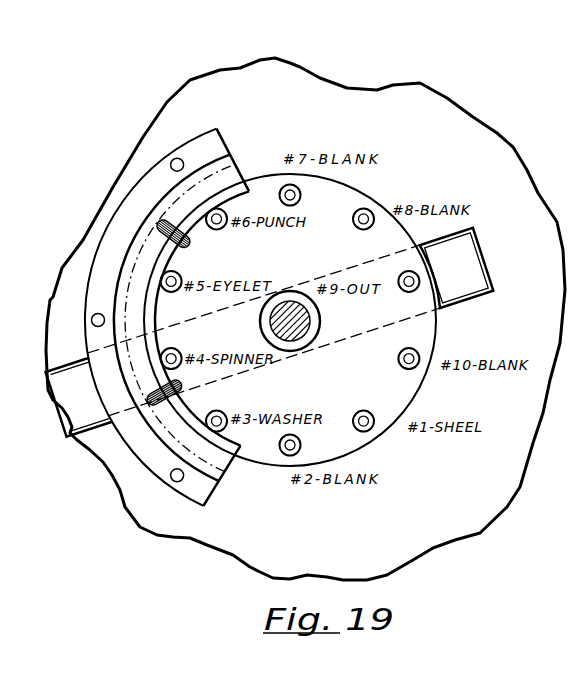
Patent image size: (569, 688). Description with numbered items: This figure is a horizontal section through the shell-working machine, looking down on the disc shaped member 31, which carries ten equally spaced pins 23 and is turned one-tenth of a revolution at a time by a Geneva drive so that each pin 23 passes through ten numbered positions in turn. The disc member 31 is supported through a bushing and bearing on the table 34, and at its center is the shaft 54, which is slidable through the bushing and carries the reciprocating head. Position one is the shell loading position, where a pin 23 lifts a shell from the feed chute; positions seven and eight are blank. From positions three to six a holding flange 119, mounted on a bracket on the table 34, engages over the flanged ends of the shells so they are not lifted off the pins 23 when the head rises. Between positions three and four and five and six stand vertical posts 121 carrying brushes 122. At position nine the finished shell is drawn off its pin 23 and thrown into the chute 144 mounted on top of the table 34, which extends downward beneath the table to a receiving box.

The table 34 is at (457, 523).
The disc shaped member 31 is at (417, 393).
The pin 23 is at (415, 352).
The shaft 54 is at (300, 338).
The holding flange 119 is at (225, 460).
The chute 144 is at (475, 277).
The vertical post 121 is at (163, 222).
The brush 122 is at (186, 244).